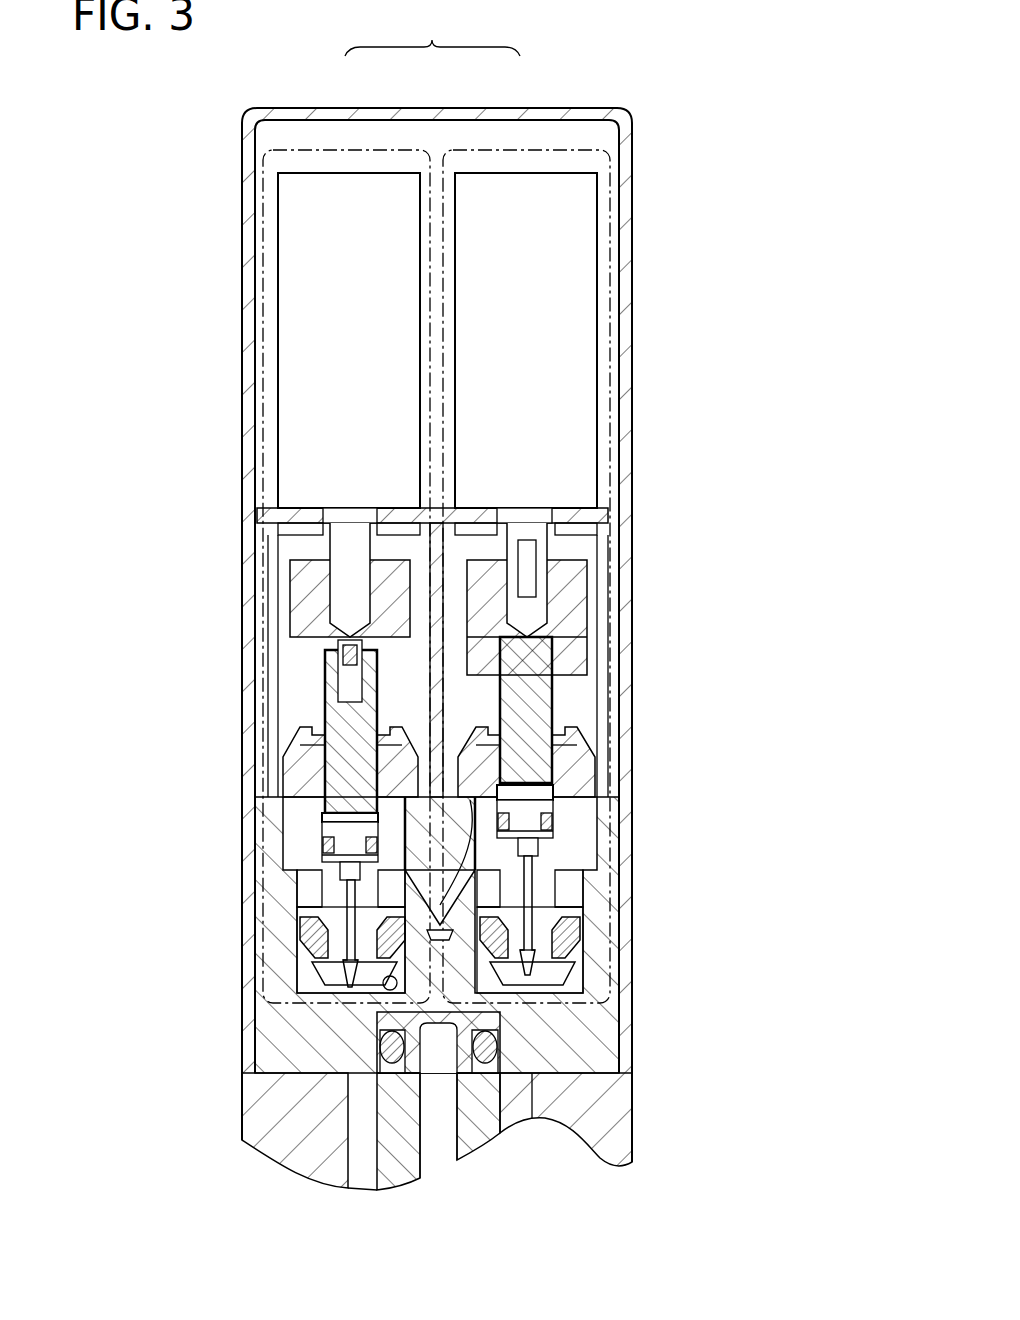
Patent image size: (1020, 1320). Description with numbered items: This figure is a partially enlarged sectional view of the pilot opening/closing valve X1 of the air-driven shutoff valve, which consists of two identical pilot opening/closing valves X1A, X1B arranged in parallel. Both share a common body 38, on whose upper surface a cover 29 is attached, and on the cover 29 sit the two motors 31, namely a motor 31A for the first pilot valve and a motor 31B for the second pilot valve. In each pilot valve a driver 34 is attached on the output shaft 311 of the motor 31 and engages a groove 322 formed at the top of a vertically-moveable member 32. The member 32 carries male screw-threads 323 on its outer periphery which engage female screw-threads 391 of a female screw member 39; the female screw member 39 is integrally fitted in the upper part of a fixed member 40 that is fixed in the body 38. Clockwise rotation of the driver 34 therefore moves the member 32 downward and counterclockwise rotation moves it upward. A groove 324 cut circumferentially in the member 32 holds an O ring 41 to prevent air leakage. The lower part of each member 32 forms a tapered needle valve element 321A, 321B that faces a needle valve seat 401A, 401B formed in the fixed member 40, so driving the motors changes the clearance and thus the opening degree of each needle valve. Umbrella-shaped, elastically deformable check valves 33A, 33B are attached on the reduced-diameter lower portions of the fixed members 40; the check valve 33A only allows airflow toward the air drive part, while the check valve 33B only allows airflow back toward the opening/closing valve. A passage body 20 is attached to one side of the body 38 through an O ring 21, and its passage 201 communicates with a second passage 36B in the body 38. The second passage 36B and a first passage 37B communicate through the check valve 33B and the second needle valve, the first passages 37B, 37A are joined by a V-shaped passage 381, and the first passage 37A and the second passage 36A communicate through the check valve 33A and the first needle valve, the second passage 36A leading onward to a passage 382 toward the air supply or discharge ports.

The pilot opening/closing valve X1 is at (432, 32).
The pilot opening/closing valve X1A is at (378, 150).
The pilot opening/closing valve X1B is at (497, 150).
The motor 31 is at (432, 340).
The motor 31A is at (312, 345).
The motor 31B is at (563, 343).
The cover 29 is at (280, 516).
The output shaft 311 is at (345, 550).
The driver 34 is at (300, 592).
The male screw-threads 323 is at (340, 655).
The groove 322 is at (338, 690).
The vertically-moveable member 32 is at (335, 708).
The female screw-threads 391 is at (330, 720).
The female screw member 39 is at (298, 745).
The fixed member 40 is at (292, 778).
The groove 324 is at (330, 818).
The O ring 41 is at (335, 852).
The first passage 37A is at (350, 875).
The first passage 37B is at (538, 912).
The needle valve seat 401A is at (305, 900).
The needle valve seat 401B is at (580, 925).
The check valve 33A is at (312, 942).
The check valve 33B is at (562, 948).
The second passage 36A is at (302, 990).
The second passage 36B is at (585, 992).
The needle valve element 321A is at (345, 1008).
The needle valve element 321B is at (548, 878).
The body 38 is at (272, 1042).
The V-shaped passage 381 is at (650, 840).
The passage 382 is at (372, 1050).
The O ring 21 is at (282, 1093).
The passage body 20 is at (395, 1170).
The passage 201 is at (452, 1148).